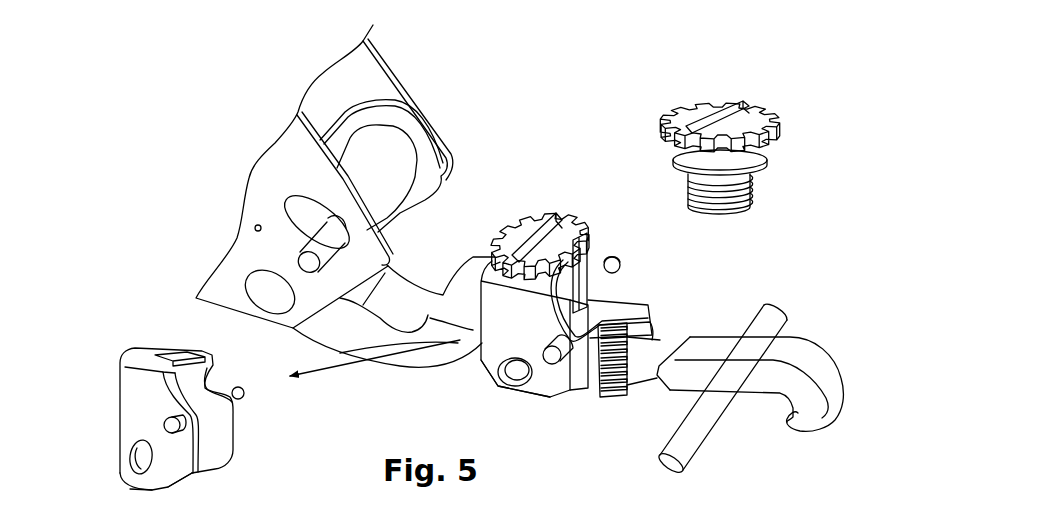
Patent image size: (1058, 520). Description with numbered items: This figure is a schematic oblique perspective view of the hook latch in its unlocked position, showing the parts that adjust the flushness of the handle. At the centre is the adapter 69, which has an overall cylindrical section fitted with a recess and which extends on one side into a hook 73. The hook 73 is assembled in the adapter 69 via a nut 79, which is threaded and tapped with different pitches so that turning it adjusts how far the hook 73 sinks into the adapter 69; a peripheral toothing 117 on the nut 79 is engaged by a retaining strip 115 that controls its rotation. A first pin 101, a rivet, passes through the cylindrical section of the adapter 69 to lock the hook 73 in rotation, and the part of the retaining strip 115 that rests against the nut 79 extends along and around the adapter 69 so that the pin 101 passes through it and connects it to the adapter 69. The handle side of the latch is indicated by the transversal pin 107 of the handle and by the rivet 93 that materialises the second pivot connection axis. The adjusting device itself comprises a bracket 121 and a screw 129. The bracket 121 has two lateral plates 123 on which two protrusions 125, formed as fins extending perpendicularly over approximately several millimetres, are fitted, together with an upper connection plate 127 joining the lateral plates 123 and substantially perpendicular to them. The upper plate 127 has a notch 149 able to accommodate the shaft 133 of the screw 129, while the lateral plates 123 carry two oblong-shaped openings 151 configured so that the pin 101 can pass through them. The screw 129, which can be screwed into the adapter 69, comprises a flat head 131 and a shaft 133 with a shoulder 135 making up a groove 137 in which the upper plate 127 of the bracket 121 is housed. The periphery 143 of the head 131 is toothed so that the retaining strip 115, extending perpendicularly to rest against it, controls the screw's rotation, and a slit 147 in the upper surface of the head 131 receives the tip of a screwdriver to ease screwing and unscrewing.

The adapter 69 is at (437, 381).
The hook 73 is at (820, 337).
The nut 79 is at (610, 404).
The rivet 93 is at (270, 294).
The first pin 101 is at (512, 374).
The transversal pin 107 is at (258, 229).
The retaining strip 115 is at (633, 309).
The peripheral toothing 117 is at (641, 378).
The bracket 121 is at (252, 416).
The lateral plates 123 is at (234, 461).
The protrusions 125 is at (616, 262).
The upper connection plate 127 is at (193, 388).
The screw 129 is at (723, 141).
The head 131 is at (786, 131).
The shaft 133 is at (751, 194).
The shoulder 135 is at (676, 166).
The groove 137 is at (660, 152).
The periphery 143 is at (667, 135).
The slit 147 is at (720, 118).
The notch 149 is at (184, 362).
The oblong-shaped openings 151 is at (135, 448).